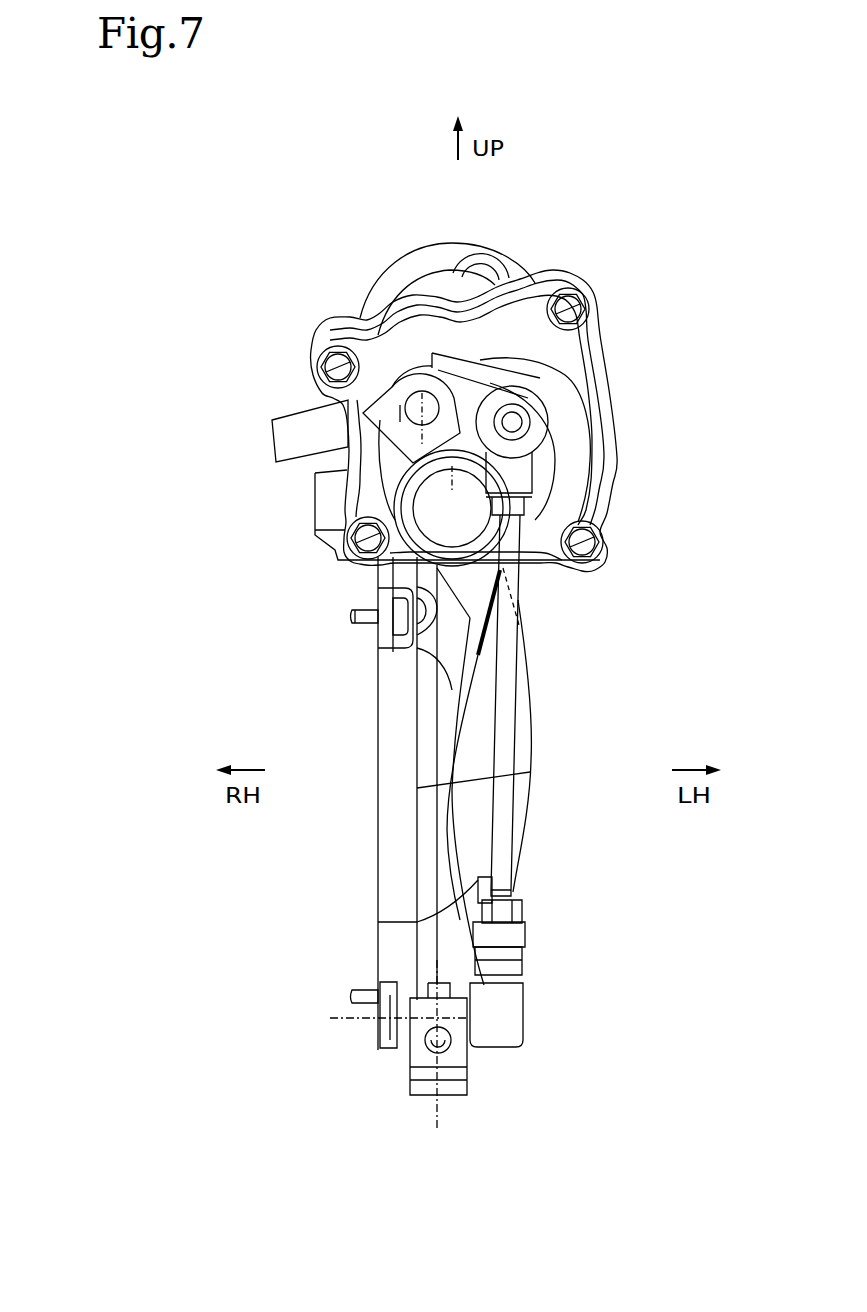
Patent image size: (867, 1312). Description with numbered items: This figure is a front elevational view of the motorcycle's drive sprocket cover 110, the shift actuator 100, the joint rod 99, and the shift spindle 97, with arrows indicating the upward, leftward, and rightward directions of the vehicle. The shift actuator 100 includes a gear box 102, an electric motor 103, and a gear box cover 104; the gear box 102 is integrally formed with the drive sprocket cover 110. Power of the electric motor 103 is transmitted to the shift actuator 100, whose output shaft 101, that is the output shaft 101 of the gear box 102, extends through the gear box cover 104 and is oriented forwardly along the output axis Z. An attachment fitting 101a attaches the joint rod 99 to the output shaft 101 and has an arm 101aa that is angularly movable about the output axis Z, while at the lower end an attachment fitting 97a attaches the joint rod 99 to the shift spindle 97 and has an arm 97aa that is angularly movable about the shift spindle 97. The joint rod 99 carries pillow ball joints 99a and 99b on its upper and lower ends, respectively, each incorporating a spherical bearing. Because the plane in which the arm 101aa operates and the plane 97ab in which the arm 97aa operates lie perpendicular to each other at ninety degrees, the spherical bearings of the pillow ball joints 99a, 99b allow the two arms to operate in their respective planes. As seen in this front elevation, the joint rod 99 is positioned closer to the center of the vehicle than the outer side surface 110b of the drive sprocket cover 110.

The shift actuator 100 is at (360, 248).
The output shaft 101 is at (404, 399).
The attachment fitting 101a is at (392, 370).
The arm 101aa is at (477, 360).
The gear box 102 is at (563, 270).
The electric motor 103 is at (507, 255).
The gear box cover 104 is at (550, 352).
The joint rod 99 is at (502, 817).
The pillow ball joint 99a is at (538, 392).
The pillow ball joint 99b is at (525, 1010).
The drive sprocket cover 110 is at (358, 855).
The outer side surface 110b is at (530, 738).
The shift spindle 97 is at (350, 1020).
The attachment fitting 97a is at (410, 1058).
The arm 97aa is at (433, 987).
The plane 97ab is at (440, 1108).